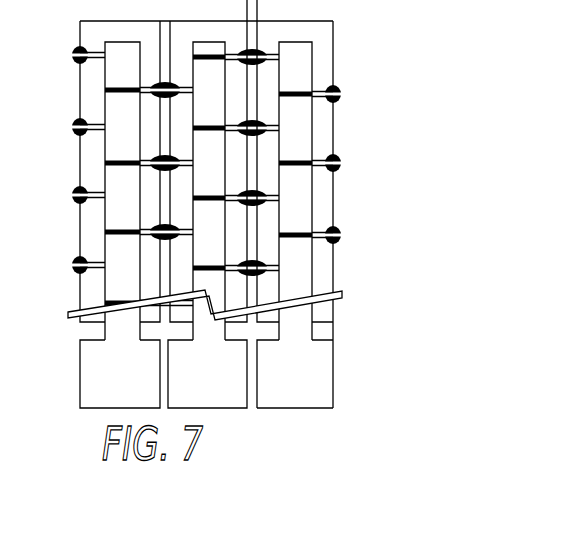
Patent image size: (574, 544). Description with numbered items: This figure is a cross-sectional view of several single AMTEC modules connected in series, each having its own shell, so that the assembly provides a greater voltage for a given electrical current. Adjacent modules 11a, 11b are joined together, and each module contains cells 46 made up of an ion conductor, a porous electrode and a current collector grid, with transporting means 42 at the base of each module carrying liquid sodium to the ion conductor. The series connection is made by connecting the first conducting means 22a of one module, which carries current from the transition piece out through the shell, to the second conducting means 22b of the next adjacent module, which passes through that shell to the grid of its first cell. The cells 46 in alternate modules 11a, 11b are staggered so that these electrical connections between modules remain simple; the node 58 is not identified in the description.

The contact node 58 is at (257, 52).
The second conducting means 22b is at (270, 53).
The first conducting means 22a is at (268, 66).
The cell 46 is at (302, 135).
The transporting means 42 is at (308, 378).
The AMTEC module 11a is at (240, 410).
The AMTEC module 11b is at (320, 412).